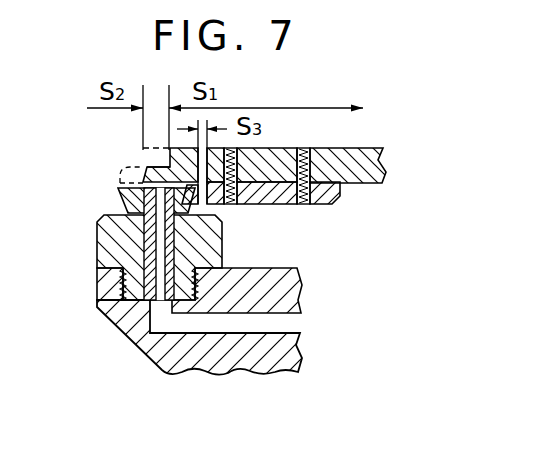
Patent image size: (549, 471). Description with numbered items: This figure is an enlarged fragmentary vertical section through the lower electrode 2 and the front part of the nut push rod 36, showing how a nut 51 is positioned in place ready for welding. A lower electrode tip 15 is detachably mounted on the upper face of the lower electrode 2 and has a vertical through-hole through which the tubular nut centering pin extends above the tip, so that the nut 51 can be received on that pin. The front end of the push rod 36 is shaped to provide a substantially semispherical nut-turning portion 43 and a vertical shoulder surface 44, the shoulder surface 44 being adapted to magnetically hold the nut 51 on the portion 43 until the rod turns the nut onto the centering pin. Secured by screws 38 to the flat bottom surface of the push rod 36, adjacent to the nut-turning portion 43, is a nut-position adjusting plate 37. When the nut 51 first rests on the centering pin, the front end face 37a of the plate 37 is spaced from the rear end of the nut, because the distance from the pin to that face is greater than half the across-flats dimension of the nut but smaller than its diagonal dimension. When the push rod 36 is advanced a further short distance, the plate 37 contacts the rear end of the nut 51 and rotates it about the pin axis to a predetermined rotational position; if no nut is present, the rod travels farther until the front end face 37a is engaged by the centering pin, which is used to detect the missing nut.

The lower electrode 2 is at (125, 333).
The lower electrode tip 15 is at (97, 247).
The push rod 36 is at (369, 177).
The nut-position adjusting plate 37 is at (290, 205).
The front end face 37a is at (224, 205).
The screws 38 is at (312, 205).
The nut-turning portion 43 is at (142, 168).
The shoulder surface 44 is at (169, 157).
The nut 51 is at (113, 213).